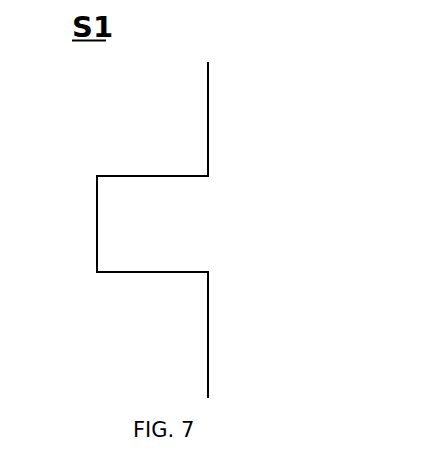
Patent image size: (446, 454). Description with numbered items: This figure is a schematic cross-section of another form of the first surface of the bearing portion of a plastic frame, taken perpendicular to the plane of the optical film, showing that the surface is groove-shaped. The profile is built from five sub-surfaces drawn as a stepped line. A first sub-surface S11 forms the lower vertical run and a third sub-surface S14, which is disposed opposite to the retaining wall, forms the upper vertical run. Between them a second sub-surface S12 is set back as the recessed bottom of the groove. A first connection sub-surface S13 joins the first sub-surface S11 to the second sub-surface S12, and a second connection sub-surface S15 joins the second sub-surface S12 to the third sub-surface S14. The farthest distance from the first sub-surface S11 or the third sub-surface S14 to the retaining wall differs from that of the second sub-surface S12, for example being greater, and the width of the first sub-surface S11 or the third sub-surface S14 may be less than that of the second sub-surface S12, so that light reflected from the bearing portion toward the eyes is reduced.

The third sub-surface S14 is at (208, 100).
The second connection sub-surface S15 is at (175, 178).
The second sub-surface S12 is at (97, 254).
The first connection sub-surface S13 is at (182, 272).
The first sub-surface S11 is at (208, 323).